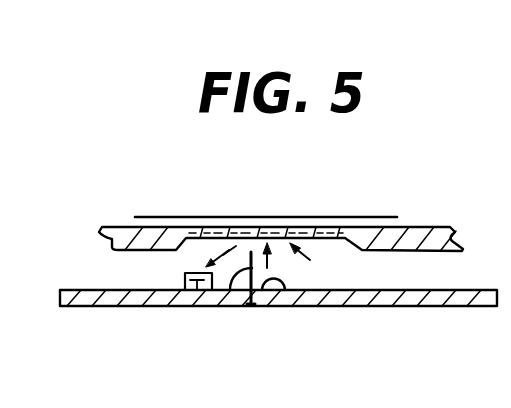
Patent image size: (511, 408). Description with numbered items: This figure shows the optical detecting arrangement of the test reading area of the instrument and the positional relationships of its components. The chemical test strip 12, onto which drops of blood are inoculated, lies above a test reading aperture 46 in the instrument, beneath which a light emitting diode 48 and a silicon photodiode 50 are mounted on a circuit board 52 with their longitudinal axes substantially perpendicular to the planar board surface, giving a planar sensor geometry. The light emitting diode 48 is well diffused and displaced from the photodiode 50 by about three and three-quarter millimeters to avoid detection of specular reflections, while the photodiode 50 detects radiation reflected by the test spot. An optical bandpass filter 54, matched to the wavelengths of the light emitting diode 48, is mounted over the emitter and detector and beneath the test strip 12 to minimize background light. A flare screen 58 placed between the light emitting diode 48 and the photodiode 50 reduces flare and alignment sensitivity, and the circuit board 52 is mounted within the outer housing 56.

The chemical test strip 12 is at (313, 218).
The outer housing 56 is at (428, 227).
The optical bandpass filter 54 is at (235, 227).
The test reading aperture 46 is at (310, 260).
The circuit board 52 is at (343, 307).
The silicon photodiode 50 is at (186, 290).
The flare screen 58 is at (230, 290).
The light emitting diode 48 is at (270, 271).